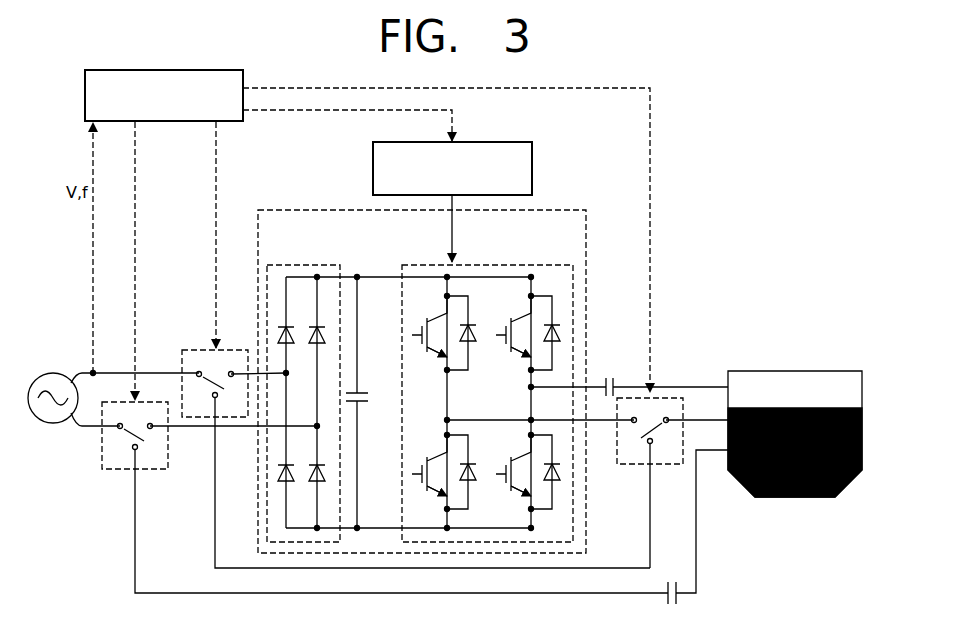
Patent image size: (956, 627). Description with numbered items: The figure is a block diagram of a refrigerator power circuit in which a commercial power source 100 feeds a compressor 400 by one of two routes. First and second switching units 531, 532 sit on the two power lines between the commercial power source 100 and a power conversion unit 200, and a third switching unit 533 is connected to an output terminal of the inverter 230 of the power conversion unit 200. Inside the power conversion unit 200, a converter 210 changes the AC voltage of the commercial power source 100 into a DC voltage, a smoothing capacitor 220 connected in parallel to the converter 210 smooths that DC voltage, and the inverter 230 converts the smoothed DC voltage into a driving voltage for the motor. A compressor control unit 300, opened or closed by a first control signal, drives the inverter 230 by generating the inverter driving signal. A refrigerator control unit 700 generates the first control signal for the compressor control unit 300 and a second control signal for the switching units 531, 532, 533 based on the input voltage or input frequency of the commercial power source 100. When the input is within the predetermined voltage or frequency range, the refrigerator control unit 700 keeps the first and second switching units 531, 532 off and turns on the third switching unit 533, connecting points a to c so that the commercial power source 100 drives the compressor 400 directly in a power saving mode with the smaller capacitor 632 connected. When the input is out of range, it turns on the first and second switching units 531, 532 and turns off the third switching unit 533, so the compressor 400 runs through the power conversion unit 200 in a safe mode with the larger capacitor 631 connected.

The commercial power source 100 is at (56, 373).
The power conversion unit 200 is at (278, 210).
The converter 210 is at (314, 265).
The smoothing capacitor 220 is at (362, 392).
The inverter 230 is at (487, 265).
The compressor control unit 300 is at (373, 168).
The compressor 400 is at (796, 371).
The first switching unit 531 is at (117, 470).
The second switching unit 532 is at (196, 350).
The third switching unit 533 is at (632, 466).
The capacitor 631 is at (610, 376).
The capacitor 632 is at (672, 580).
The refrigerator control unit 700 is at (85, 97).